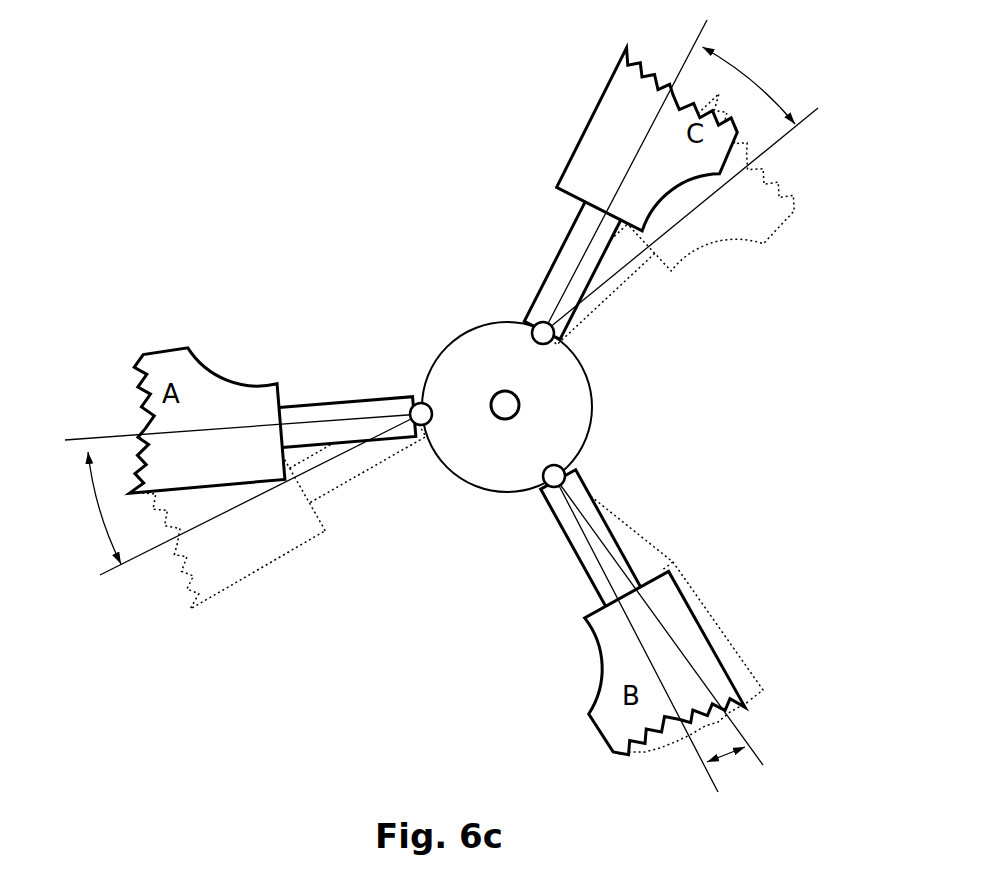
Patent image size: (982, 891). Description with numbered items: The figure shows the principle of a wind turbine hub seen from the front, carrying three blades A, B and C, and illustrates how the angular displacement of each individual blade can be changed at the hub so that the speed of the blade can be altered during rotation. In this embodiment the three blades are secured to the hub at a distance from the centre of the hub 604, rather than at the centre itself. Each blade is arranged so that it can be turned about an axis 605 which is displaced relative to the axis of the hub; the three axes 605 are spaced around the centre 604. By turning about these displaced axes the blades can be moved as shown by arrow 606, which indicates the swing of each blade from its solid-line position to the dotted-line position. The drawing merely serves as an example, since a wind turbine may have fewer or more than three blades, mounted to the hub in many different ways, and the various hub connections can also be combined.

The centre of the hub 604 is at (498, 392).
The axis 605 is at (553, 340).
The arrow 606 is at (419, 418).